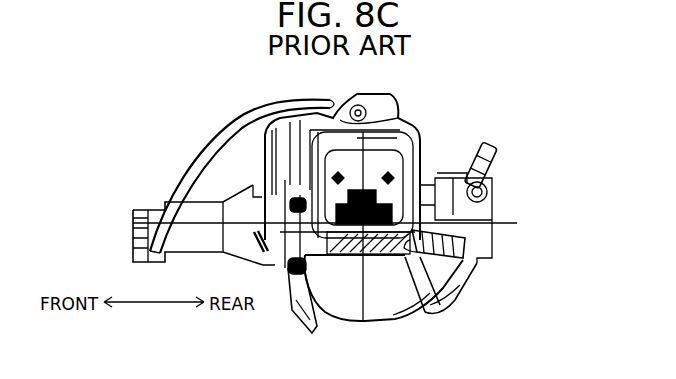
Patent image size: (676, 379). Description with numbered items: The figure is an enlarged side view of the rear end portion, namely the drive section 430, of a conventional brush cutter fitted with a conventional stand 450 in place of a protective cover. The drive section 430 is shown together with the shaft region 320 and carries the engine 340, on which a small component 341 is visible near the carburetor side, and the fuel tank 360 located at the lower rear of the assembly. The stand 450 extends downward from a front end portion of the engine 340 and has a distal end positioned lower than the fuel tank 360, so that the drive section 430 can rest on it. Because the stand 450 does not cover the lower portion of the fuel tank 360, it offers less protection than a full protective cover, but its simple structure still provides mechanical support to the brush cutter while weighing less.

The drive shaft tube 320 is at (137, 209).
The drive section 430 is at (265, 148).
The engine 340 is at (400, 121).
The primer bulb 341 is at (503, 176).
The fuel tank 360 is at (390, 293).
The stand 450 is at (302, 315).